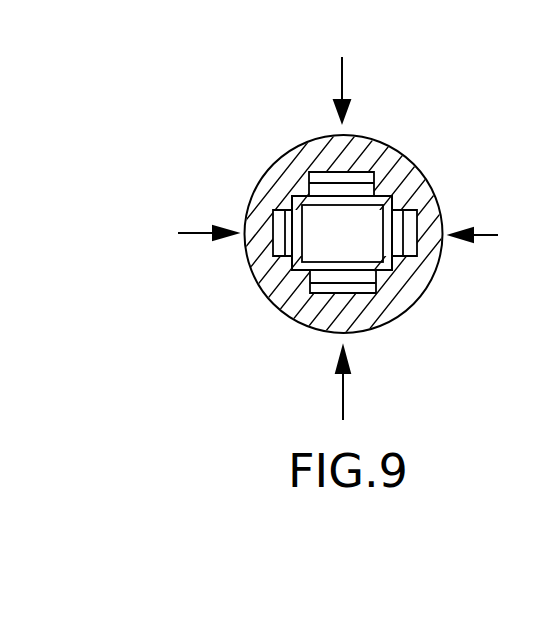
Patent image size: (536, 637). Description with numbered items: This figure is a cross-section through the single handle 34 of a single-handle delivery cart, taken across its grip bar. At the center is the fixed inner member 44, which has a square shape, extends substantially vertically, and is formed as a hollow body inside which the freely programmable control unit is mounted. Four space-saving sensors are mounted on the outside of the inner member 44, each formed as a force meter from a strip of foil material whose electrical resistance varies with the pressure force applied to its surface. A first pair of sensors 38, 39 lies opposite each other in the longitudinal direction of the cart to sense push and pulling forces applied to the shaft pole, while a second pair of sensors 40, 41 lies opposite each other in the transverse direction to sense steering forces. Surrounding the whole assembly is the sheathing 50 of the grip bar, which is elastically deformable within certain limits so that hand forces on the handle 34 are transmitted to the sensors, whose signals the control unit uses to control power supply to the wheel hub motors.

The single handle 34 is at (415, 145).
The sensor 38 is at (327, 177).
The sensor 39 is at (364, 292).
The sensor 40 is at (273, 230).
The sensor 41 is at (417, 247).
The inner member 44 is at (363, 250).
The sheathing 50 is at (256, 277).